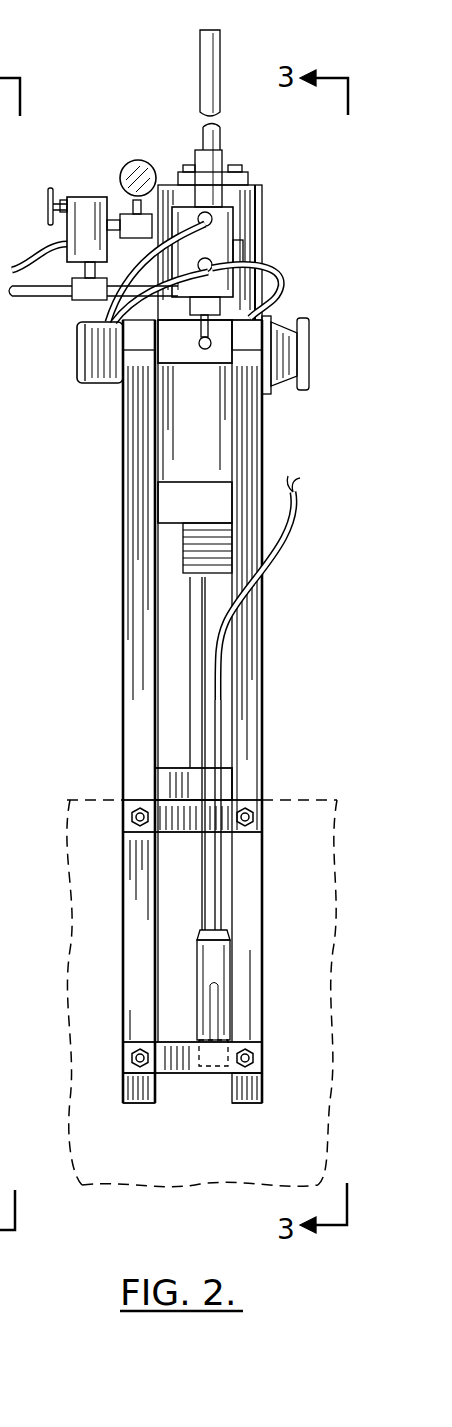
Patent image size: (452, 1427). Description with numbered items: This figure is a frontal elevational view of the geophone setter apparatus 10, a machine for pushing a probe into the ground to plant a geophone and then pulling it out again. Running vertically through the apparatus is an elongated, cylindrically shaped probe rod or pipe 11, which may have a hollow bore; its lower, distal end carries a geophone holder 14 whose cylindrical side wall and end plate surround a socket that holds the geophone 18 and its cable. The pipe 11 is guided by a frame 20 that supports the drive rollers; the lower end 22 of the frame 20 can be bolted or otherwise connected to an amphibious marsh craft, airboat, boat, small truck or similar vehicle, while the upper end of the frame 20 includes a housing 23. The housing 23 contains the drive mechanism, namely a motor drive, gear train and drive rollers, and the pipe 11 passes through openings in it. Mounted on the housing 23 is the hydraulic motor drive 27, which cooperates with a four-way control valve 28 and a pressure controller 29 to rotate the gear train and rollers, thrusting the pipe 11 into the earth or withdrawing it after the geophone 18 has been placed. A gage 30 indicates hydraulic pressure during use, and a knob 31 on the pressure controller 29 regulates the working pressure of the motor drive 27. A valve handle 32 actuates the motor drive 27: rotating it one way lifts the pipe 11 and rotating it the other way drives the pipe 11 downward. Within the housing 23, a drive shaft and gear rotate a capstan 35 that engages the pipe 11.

The geophone setter apparatus 10 is at (242, 24).
The pipe 11 is at (213, 67).
The geophone holder 14 is at (197, 965).
The geophone 18 is at (200, 1074).
The frame 20 is at (243, 908).
The lower end 22 is at (241, 1104).
The housing 23 is at (262, 213).
The motor drive 27 is at (101, 352).
The four-way control valve 28 is at (218, 238).
The pressure controller 29 is at (95, 197).
The gage 30 is at (140, 165).
The knob 31 is at (61, 178).
The valve handle 32 is at (200, 348).
The capstan 35 is at (285, 345).